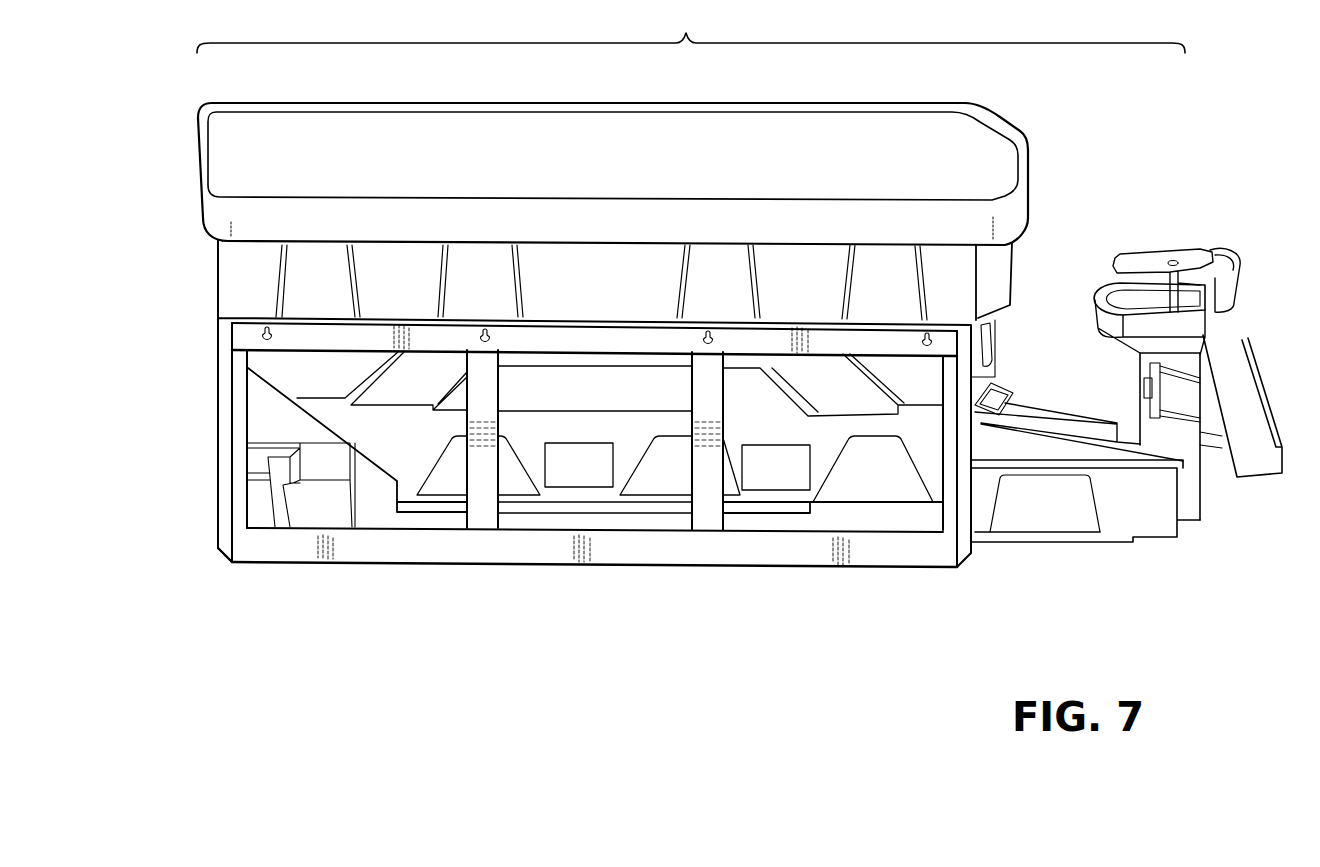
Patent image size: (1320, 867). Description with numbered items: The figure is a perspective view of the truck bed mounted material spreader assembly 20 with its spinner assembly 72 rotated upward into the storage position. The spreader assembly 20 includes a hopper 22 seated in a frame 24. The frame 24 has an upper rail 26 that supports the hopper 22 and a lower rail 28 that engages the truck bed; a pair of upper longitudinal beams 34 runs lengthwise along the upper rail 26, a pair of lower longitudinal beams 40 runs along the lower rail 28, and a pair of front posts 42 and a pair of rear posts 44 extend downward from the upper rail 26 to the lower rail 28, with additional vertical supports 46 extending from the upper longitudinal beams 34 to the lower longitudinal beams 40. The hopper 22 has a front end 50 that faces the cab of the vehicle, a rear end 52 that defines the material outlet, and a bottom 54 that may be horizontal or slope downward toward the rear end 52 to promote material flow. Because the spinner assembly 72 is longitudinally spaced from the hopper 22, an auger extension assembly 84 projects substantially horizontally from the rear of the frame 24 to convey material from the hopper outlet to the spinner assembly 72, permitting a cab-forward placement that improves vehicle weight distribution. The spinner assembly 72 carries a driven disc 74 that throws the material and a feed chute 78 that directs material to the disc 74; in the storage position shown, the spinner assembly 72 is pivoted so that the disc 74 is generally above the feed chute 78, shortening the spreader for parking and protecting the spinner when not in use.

The spreader assembly 20 is at (691, 29).
The hopper 22 is at (170, 254).
The frame 24 is at (246, 572).
The upper rail 26 is at (206, 342).
The lower rail 28 is at (206, 544).
The upper longitudinal beams 34 is at (315, 338).
The lower longitudinal beams 40 is at (482, 553).
The front posts 42 is at (230, 510).
The rear posts 44 is at (966, 549).
The vertical supports 46 is at (493, 482).
The front end 50 is at (186, 168).
The rear end 52 is at (1052, 175).
The bottom 54 is at (906, 494).
The spinner assembly 72 is at (1247, 251).
The disc 74 is at (1155, 257).
The feed chute 78 is at (1244, 426).
The auger extension assembly 84 is at (1094, 552).